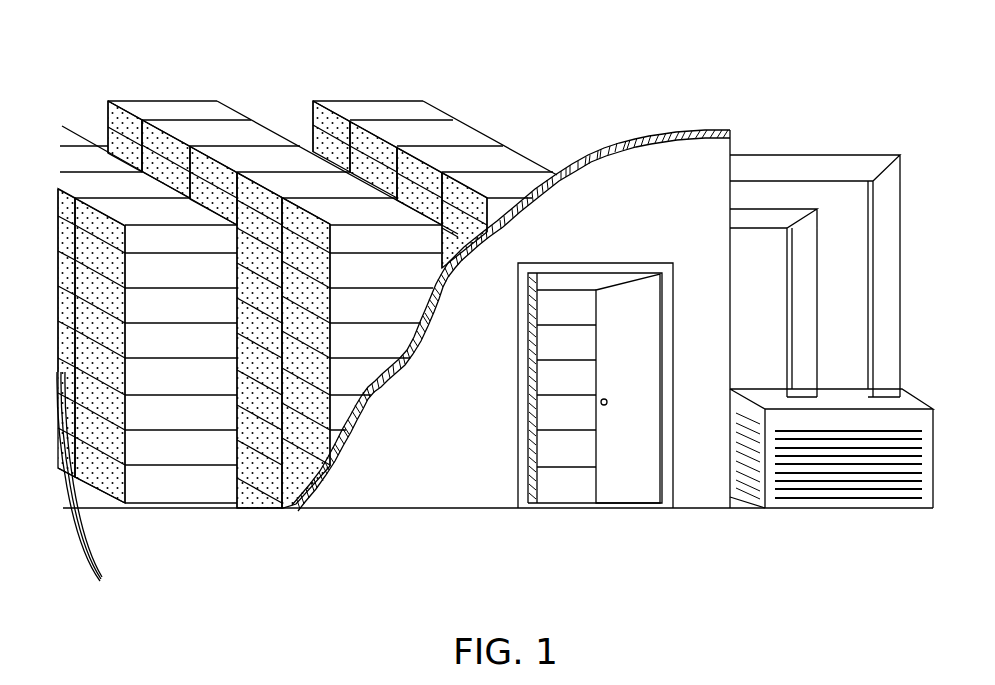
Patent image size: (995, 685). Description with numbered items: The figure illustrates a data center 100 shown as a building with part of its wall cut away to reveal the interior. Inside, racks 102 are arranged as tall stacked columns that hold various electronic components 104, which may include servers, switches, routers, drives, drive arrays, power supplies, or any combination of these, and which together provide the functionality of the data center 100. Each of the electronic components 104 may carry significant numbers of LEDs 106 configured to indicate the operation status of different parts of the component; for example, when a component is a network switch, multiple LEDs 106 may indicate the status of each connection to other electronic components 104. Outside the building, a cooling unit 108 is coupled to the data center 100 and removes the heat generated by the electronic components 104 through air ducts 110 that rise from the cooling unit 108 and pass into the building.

The data center 100 is at (699, 61).
The racks 102 is at (357, 97).
The electronic components 104 is at (108, 108).
The LEDs 106 is at (167, 142).
The cooling unit 108 is at (898, 509).
The air ducts 110 is at (832, 153).